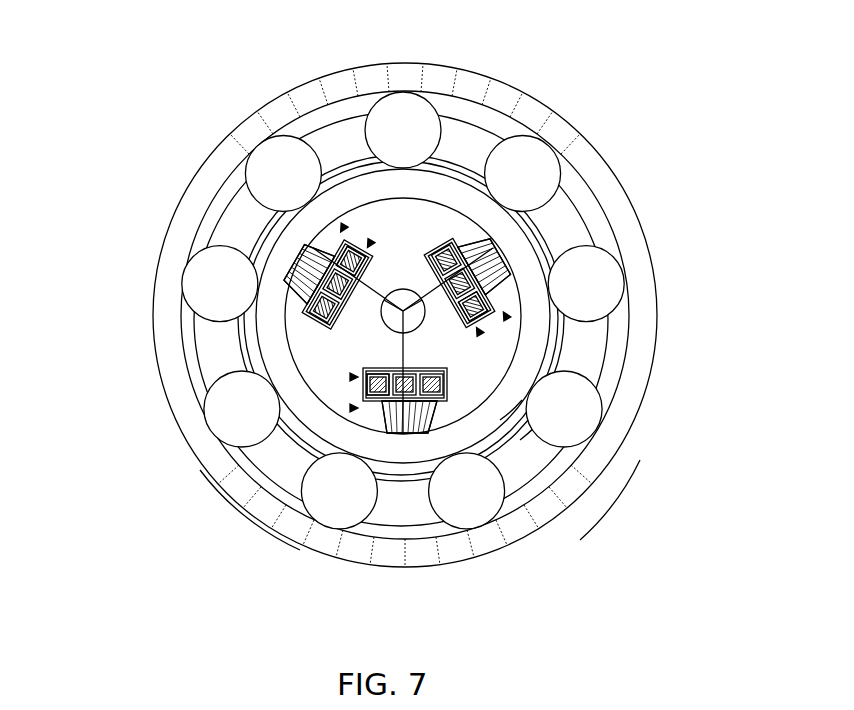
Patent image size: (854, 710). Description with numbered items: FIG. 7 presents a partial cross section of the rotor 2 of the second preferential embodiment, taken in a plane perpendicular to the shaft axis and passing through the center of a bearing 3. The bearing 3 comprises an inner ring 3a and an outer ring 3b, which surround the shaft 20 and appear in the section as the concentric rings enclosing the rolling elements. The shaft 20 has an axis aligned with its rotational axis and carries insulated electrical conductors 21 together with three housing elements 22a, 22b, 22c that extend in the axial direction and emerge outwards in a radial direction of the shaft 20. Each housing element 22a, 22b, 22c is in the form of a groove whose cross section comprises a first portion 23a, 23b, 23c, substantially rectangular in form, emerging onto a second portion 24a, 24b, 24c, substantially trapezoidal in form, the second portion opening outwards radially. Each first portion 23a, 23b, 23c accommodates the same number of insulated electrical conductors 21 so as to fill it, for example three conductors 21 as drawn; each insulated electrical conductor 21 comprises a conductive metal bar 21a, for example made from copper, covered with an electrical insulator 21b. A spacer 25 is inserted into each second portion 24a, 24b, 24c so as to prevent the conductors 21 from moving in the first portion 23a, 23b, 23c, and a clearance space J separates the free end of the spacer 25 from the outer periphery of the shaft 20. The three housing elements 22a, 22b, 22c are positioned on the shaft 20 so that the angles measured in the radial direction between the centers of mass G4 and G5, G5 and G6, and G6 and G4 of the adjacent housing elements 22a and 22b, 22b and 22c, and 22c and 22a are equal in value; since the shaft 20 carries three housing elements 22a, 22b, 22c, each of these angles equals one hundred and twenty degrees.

The rotor 2 is at (613, 112).
The bearing 3 is at (502, 77).
The inner ring 3a is at (228, 488).
The outer ring 3b is at (279, 542).
The shaft 20 is at (593, 478).
The insulated electrical conductor 21 is at (505, 340).
The conductive metal bar 21a is at (533, 500).
The electrical insulator 21b is at (538, 490).
The housing element 22a is at (362, 405).
The housing element 22b is at (320, 300).
The housing element 22c is at (495, 288).
The first portion 23a is at (360, 388).
The first portion 23b is at (363, 250).
The first portion 23c is at (403, 268).
The second portion 24a is at (440, 430).
The second portion 24b is at (303, 238).
The second portion 24c is at (484, 248).
The spacer 25 is at (600, 245).
The clearance space J is at (500, 232).
The center of mass G4 is at (327, 393).
The center of mass G5 is at (312, 353).
The center of mass G6 is at (428, 223).